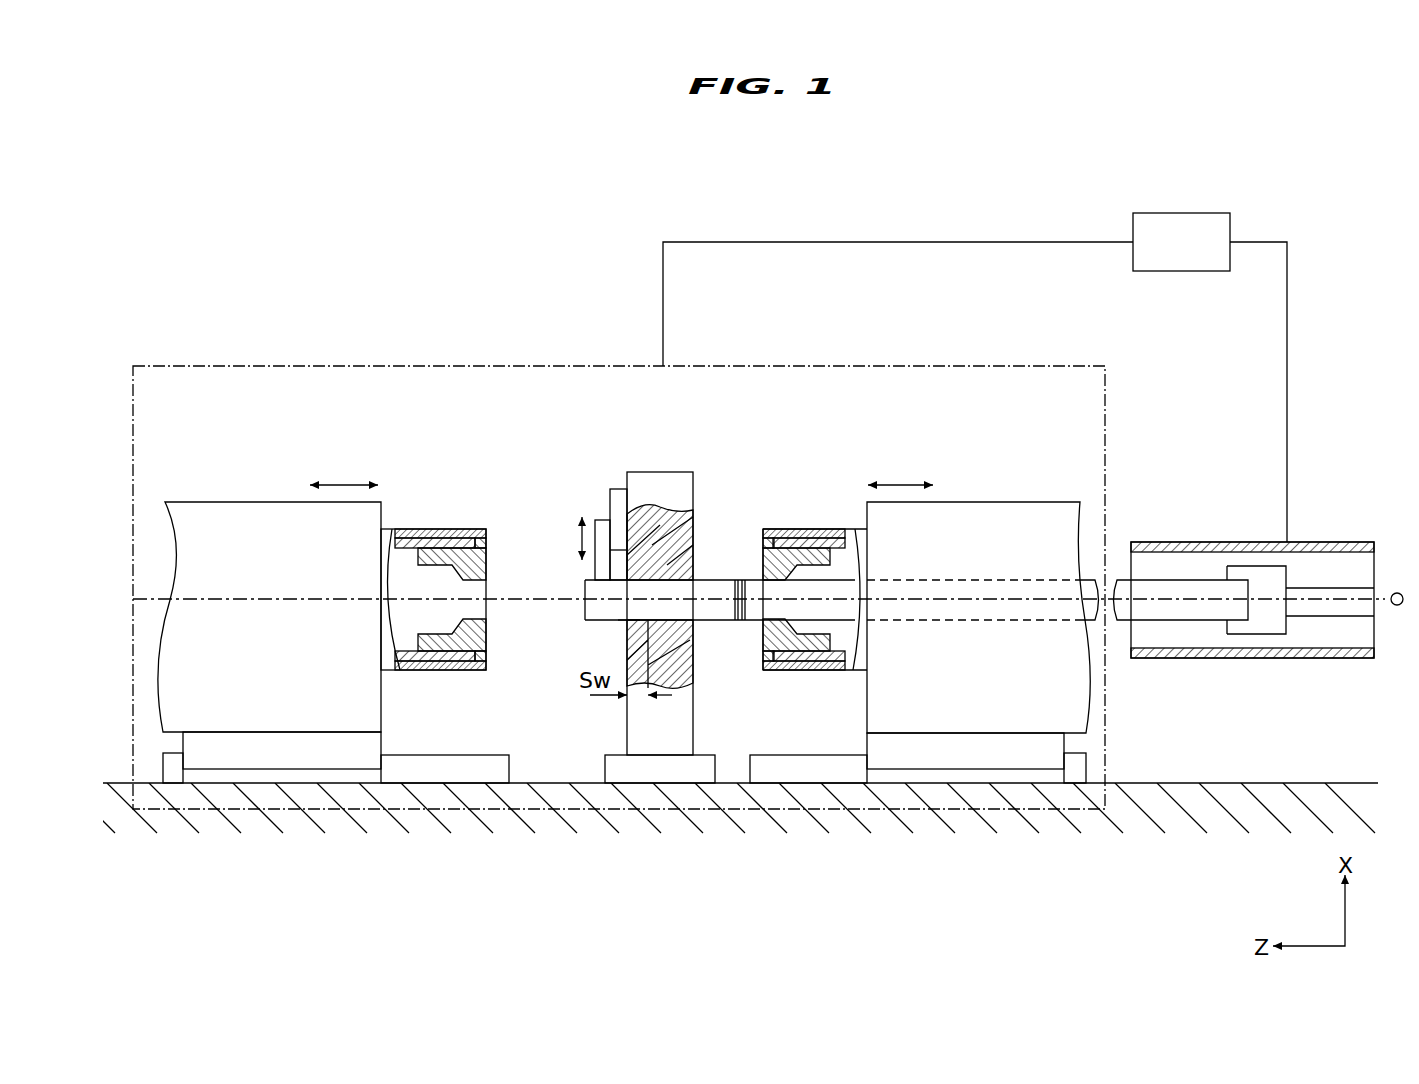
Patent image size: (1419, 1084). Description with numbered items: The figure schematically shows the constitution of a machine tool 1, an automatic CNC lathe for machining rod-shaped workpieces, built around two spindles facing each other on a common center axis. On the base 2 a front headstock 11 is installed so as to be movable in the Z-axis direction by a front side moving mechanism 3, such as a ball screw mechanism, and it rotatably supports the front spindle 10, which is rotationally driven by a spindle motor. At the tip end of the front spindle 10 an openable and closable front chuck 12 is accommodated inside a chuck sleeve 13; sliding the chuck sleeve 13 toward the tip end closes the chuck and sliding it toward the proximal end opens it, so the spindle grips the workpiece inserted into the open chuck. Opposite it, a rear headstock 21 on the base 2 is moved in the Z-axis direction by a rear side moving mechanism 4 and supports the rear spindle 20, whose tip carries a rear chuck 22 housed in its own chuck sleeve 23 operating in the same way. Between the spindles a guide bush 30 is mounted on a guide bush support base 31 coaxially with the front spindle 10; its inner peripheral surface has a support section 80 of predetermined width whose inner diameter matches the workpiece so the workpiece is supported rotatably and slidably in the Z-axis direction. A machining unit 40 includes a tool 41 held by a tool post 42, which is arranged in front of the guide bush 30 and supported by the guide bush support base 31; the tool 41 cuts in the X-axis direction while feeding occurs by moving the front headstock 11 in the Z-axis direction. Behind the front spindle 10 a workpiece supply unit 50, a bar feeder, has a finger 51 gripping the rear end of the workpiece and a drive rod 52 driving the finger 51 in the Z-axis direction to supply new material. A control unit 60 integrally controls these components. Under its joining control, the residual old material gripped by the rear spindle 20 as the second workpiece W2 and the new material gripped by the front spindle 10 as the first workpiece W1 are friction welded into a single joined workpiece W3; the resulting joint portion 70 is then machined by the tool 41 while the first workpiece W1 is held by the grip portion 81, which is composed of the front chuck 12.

The machine tool 1 is at (1298, 170).
The base 2 is at (1222, 790).
The front side moving mechanism 3 is at (1076, 752).
The rear side moving mechanism 4 is at (165, 752).
The front spindle 10 is at (808, 630).
The front headstock 11 is at (975, 508).
The front chuck 12 is at (795, 640).
The chuck sleeve 13 is at (820, 529).
The rear spindle 20 is at (445, 630).
The rear headstock 21 is at (275, 508).
The rear chuck 22 is at (425, 673).
The chuck sleeve 23 is at (432, 529).
The guide bush 30 is at (663, 523).
The guide bush support base 31 is at (655, 716).
The machining unit 40 is at (588, 490).
The tool 41 is at (597, 562).
The tool post 42 is at (621, 494).
The workpiece supply unit 50 is at (1267, 569).
The finger 51 is at (1268, 627).
The drive rod 52 is at (1305, 588).
The control unit 60 is at (1180, 222).
The joint portion 70 is at (738, 607).
The support section 80 is at (626, 613).
The grip portion 81 is at (790, 660).
The first workpiece W1 is at (750, 585).
The second workpiece W2 is at (708, 585).
The joined workpiece W3 is at (1123, 575).